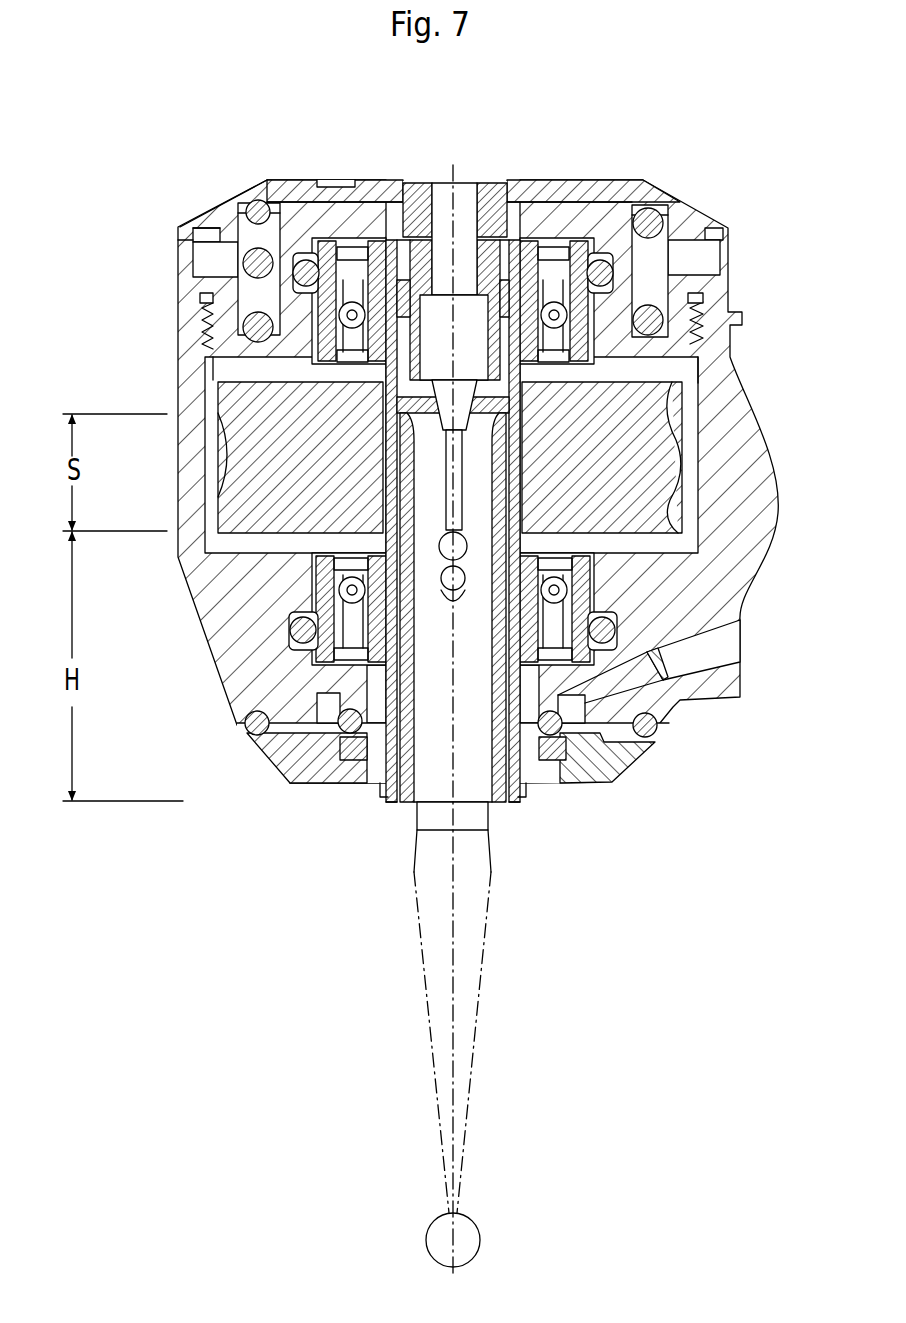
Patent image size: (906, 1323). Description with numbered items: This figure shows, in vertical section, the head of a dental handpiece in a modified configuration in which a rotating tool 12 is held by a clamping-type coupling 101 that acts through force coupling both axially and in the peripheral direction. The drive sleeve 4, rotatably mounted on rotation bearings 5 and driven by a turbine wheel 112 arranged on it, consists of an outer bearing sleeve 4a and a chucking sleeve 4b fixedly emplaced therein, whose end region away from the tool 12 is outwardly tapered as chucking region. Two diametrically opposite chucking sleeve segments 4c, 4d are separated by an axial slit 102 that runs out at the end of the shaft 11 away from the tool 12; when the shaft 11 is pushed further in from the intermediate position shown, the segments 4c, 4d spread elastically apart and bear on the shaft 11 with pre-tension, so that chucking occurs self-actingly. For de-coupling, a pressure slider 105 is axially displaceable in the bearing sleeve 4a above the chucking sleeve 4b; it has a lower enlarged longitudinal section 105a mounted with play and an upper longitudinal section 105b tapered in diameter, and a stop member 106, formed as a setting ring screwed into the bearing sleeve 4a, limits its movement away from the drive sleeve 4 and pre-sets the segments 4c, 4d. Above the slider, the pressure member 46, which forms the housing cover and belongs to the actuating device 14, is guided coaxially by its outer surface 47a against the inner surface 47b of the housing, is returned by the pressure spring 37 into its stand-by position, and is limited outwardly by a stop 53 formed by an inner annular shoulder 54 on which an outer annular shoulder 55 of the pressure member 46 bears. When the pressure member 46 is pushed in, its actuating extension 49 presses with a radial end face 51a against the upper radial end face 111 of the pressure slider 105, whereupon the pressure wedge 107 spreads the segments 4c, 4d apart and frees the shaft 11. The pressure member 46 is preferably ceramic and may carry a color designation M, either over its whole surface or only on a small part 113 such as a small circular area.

The actuating device 14 is at (512, 176).
The pressure member 46 is at (290, 182).
The color designation M is at (223, 175).
The small part 113 is at (252, 181).
The outer surface of the pressure member 47a is at (197, 212).
The inner surface of the housing 47b is at (181, 233).
The pressure spring 37 is at (240, 272).
The stop 53 is at (728, 256).
The inner annular shoulder 54 is at (728, 256).
The outer annular shoulder 55 is at (714, 228).
The rotation bearings 5 is at (316, 308).
The turbine wheel 112 is at (240, 493).
The coupling 101 is at (545, 472).
The drive sleeve 4 is at (400, 808).
The outer bearing sleeve 4a is at (380, 797).
The chucking sleeve 4b is at (502, 803).
The chucking sleeve segment 4c is at (404, 599).
The chucking sleeve segment 4d is at (403, 480).
The radial end face 51a is at (417, 203).
The actuating extension 49 is at (400, 198).
The upper radial end face 111 is at (486, 235).
The stop member 106 is at (536, 258).
The upper longitudinal section 105b is at (482, 240).
The pressure slider 105 is at (469, 352).
The lower longitudinal section 105a is at (500, 420).
The pressure wedge 107 is at (506, 470).
The axial slit 102 is at (497, 515).
The shaft 11 is at (466, 697).
The rotating tool 12 is at (478, 874).